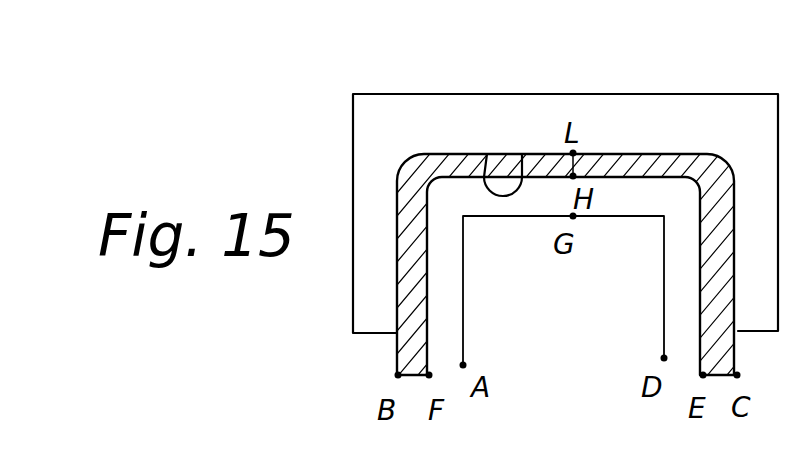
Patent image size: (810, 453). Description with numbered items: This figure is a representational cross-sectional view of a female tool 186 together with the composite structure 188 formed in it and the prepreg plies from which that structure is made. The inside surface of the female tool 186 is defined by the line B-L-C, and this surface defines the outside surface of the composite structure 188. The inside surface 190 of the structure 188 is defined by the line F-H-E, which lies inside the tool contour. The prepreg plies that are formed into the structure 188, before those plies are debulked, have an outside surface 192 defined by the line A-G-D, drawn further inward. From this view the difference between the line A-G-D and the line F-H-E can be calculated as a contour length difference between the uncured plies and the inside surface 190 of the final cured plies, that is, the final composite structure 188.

The female tool 186 is at (690, 113).
The composite structure 188 is at (485, 165).
The inside surface of the structure 190 is at (653, 178).
The outside surface of the prepreg plies 192 is at (463, 328).